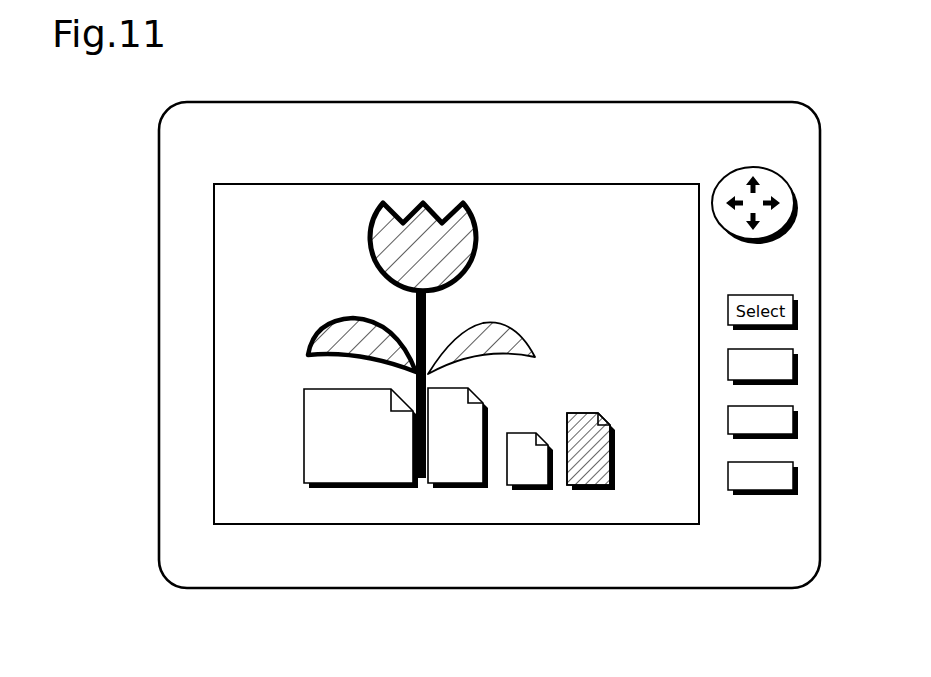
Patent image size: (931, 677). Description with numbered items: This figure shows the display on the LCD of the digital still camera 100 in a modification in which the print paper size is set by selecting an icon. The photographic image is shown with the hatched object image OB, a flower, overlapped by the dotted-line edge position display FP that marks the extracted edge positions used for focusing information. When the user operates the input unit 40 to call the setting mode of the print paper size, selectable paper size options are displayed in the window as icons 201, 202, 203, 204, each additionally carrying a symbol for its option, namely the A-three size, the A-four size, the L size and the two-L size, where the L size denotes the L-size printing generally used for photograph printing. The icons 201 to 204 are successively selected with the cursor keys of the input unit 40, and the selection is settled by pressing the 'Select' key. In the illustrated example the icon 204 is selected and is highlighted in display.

The digital still camera 100 is at (493, 84).
The input unit 40 is at (751, 156).
The icon 201 is at (359, 478).
The icon 202 is at (453, 478).
The icon 203 is at (527, 482).
The icon 204 is at (581, 487).
The edge position display FP is at (477, 236).
The object image OB is at (518, 331).